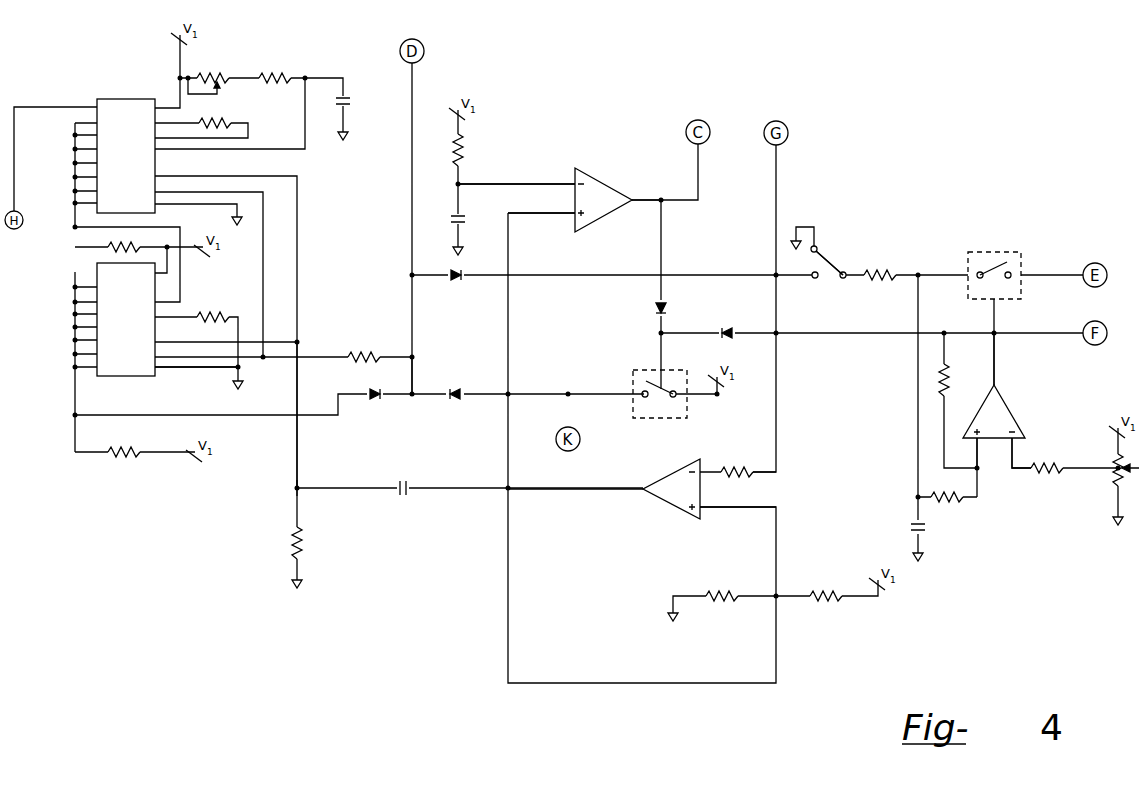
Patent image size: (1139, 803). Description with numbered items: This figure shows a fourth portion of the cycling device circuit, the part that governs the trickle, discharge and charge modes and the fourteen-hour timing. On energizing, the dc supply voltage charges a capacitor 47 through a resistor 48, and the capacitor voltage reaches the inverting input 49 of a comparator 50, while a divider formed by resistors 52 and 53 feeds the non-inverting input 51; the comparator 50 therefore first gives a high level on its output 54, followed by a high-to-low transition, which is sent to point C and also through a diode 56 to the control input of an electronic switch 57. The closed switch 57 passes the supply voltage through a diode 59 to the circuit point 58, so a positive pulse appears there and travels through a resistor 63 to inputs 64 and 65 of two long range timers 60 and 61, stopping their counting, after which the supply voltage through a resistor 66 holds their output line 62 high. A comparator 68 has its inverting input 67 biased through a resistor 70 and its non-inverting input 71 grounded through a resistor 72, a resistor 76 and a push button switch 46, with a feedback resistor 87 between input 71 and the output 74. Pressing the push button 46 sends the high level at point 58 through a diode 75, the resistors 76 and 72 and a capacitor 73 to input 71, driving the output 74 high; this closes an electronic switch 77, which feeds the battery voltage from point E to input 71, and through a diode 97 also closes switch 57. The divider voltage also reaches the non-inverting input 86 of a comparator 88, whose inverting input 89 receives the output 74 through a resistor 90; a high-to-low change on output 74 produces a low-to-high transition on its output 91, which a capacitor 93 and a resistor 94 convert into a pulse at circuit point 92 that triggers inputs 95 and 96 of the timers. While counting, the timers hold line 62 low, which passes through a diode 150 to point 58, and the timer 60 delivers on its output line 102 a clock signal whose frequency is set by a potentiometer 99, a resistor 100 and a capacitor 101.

The push button switch 46 is at (832, 266).
The capacitor 47 is at (466, 220).
The resistor 48 is at (468, 145).
The inverting input 49 is at (549, 183).
The comparator 50 is at (607, 193).
The non-inverting input 51 is at (550, 221).
The resistor 52 is at (828, 602).
The resistor 53 is at (727, 603).
The output 54 is at (638, 211).
The diode 56 is at (654, 306).
The electronic switch 57 is at (673, 412).
The circuit point 58 is at (408, 401).
The diode 59 is at (454, 389).
The long range timer 60 is at (124, 99).
The long range timer 61 is at (125, 376).
The output line 62 is at (272, 418).
The resistor 63 is at (368, 350).
The input 64 is at (177, 191).
The input 65 is at (180, 360).
The resistor 66 is at (125, 460).
The inverting input 67 is at (1018, 452).
The comparator 68 is at (998, 413).
The resistor 70 is at (1040, 475).
The non-inverting input 71 is at (979, 455).
The resistor 72 is at (948, 504).
The capacitor 73 is at (908, 527).
The output 74 is at (998, 362).
The diode 75 is at (456, 280).
The resistor 76 is at (873, 282).
The electronic switch 77 is at (1018, 240).
The non-inverting input 86 is at (728, 509).
The feedback resistor 87 is at (948, 377).
The comparator 88 is at (659, 500).
The inverting input 89 is at (712, 471).
The resistor 90 is at (742, 480).
The output 91 is at (629, 486).
The circuit point 92 is at (294, 488).
The capacitor 93 is at (402, 480).
The resistor 94 is at (303, 546).
The input 95 is at (205, 318).
The input 96 is at (223, 176).
The diode 97 is at (740, 314).
The potentiometer 99 is at (219, 76).
The resistor 100 is at (280, 74).
The capacitor 101 is at (355, 102).
The output line 102 is at (58, 106).
The diode 150 is at (370, 390).